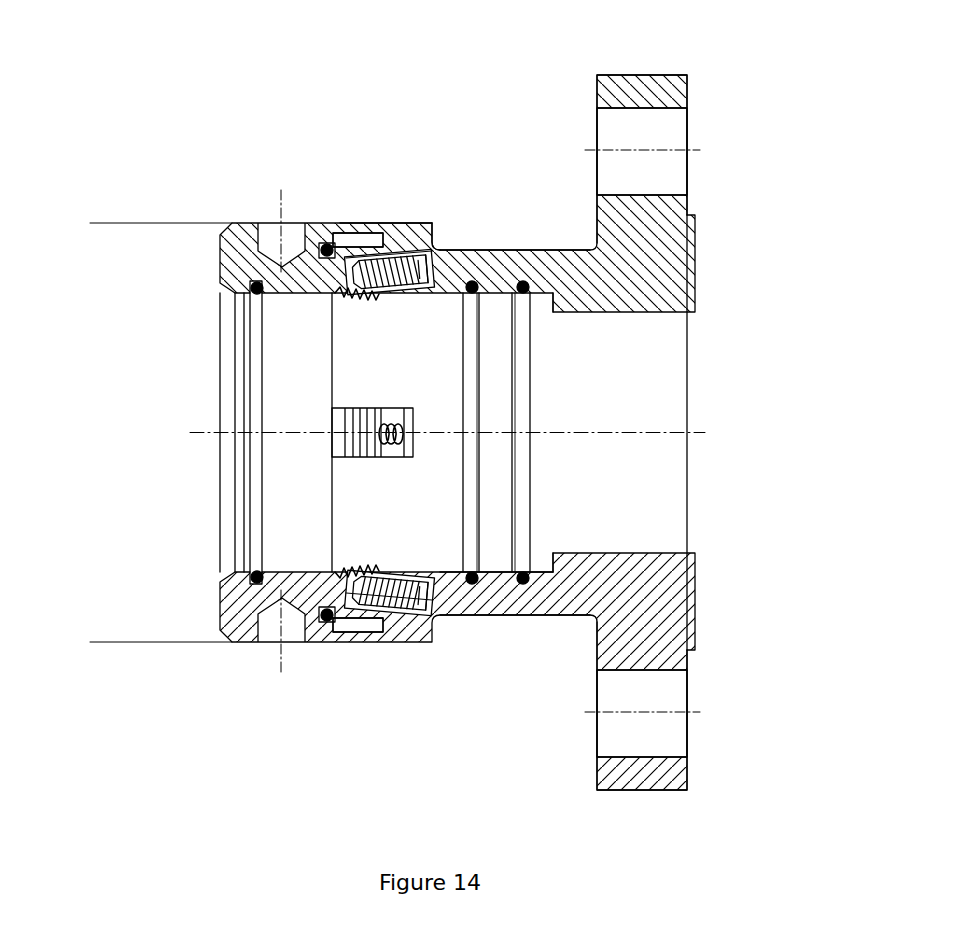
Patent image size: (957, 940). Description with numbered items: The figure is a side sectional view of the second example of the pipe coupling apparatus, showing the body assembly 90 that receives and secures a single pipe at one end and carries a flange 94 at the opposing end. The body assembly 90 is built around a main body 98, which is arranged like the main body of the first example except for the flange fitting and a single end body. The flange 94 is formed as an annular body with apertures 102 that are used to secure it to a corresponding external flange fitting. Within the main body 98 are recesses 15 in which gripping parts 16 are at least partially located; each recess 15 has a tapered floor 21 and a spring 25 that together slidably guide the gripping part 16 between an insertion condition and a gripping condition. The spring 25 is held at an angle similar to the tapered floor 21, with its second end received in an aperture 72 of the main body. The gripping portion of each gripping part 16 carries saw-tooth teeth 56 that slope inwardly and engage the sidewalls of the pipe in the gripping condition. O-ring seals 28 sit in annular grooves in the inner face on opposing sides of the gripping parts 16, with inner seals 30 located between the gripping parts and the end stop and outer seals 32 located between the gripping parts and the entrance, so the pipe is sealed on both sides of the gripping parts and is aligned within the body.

The recess 15 is at (403, 293).
The gripping part 16 is at (322, 222).
The tapered floor 21 is at (378, 228).
The spring 25 is at (405, 228).
The O-ring seals 28 is at (540, 248).
The inner seals 30 is at (521, 281).
The outer seals 32 is at (219, 223).
The teeth 56 is at (358, 297).
The aperture 72 is at (438, 228).
The body assembly 90 is at (477, 587).
The flange 94 is at (668, 608).
The main body 98 is at (423, 228).
The apertures 102 is at (665, 137).